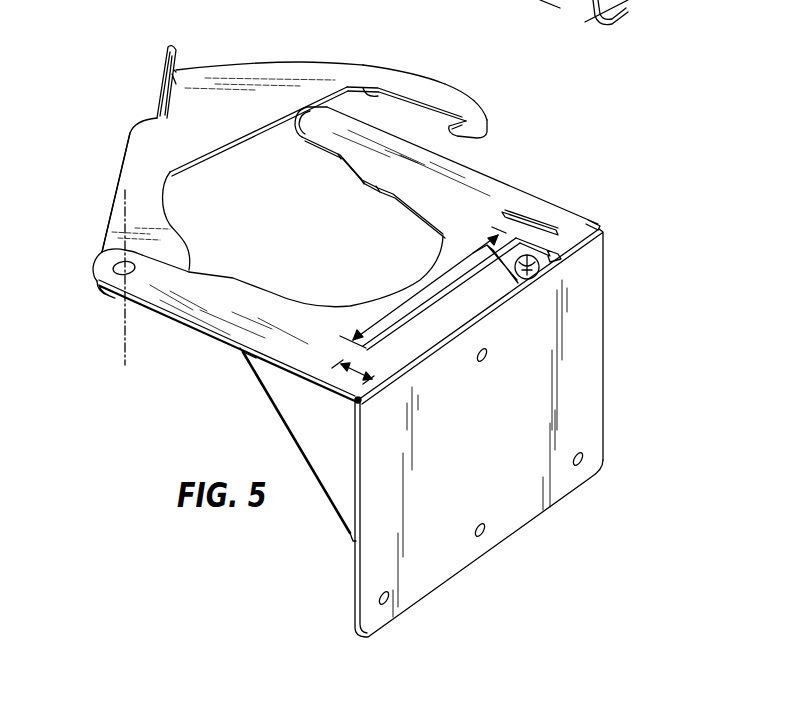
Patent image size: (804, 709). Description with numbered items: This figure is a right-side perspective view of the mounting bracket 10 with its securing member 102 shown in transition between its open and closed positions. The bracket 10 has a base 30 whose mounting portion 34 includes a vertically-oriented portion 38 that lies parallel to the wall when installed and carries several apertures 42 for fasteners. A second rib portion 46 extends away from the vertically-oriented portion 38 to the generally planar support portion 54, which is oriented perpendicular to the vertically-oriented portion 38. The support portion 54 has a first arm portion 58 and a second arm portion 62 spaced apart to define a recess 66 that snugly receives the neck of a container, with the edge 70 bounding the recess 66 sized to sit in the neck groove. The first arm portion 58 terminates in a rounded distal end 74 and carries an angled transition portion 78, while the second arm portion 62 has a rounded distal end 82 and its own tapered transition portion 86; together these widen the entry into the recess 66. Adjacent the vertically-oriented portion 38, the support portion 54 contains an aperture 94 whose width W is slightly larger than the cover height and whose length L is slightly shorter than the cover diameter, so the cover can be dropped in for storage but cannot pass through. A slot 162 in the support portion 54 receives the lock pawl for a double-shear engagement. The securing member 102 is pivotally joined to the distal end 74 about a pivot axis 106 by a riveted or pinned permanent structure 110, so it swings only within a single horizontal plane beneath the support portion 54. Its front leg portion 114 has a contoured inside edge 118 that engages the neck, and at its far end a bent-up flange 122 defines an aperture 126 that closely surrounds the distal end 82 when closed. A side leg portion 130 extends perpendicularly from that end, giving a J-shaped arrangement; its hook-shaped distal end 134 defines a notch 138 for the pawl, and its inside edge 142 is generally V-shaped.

The mounting bracket 10 is at (72, 83).
The base 30 is at (601, 226).
The mounting portion 34 is at (508, 512).
The vertically-oriented portion 38 is at (682, 0).
The apertures 42 is at (484, 362).
The second rib portion 46 is at (315, 432).
The support portion 54 is at (270, 357).
The first arm portion 58 is at (193, 310).
The second arm portion 62 is at (478, 172).
The recess 66 is at (352, 231).
The edge 70 is at (397, 293).
The distal end 74 is at (110, 263).
The transition portion 78 is at (204, 270).
The distal end 82 is at (302, 118).
The transition portion 86 is at (347, 170).
The aperture 94 is at (460, 293).
The securing member 102 is at (262, 75).
The pivot axis 106 is at (122, 212).
The fixed and permanent structure 110 is at (97, 278).
The front leg portion 114 is at (138, 158).
The inside edge 118 is at (170, 175).
The flange 122 is at (173, 46).
The aperture 126 is at (177, 82).
The side leg portion 130 is at (365, 72).
The distal end 134 is at (490, 127).
The notch 138 is at (460, 90).
The inside edge 142 is at (383, 97).
The slot 162 is at (527, 220).
The length L is at (458, 263).
The width W is at (363, 373).